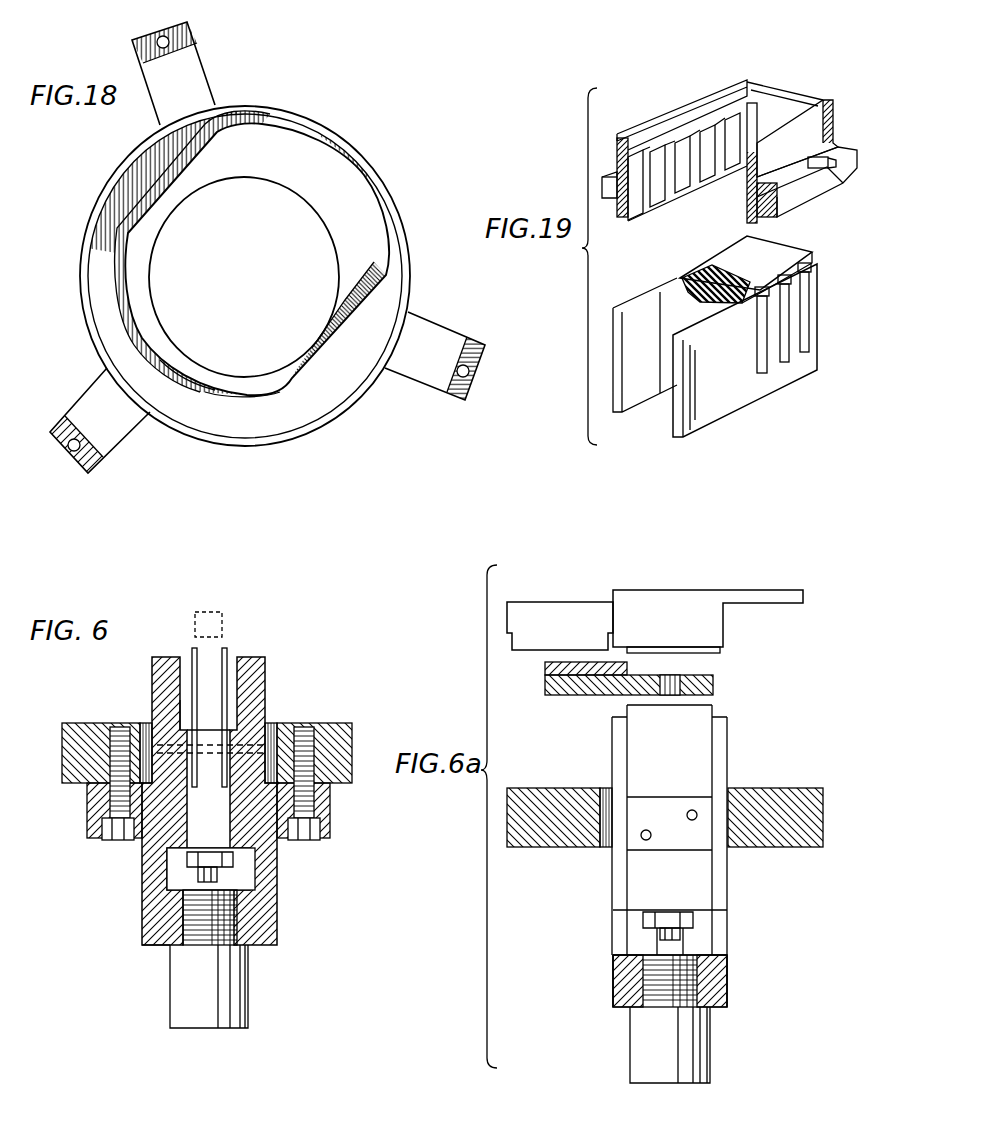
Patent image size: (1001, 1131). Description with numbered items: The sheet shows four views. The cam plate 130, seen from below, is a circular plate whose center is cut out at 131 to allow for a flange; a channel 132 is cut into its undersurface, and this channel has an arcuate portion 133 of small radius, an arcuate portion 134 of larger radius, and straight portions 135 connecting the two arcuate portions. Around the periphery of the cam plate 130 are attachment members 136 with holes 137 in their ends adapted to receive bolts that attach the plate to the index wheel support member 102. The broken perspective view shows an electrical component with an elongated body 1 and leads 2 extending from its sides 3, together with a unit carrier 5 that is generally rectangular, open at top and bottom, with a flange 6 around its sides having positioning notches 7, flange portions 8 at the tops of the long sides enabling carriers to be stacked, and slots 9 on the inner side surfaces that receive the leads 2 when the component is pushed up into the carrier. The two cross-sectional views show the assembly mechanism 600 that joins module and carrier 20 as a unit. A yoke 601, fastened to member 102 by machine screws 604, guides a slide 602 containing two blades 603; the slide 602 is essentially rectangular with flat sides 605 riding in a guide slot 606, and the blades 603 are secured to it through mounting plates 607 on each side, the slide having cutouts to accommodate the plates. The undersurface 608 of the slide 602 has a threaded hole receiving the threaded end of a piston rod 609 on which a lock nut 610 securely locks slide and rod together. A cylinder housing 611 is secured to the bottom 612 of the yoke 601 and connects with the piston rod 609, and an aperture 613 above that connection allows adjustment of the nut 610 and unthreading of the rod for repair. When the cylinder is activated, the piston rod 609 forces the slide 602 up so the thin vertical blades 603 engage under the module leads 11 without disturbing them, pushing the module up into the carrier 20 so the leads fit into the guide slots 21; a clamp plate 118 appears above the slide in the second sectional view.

In FIG. 18, the cam plate 130 is at (298, 115).
In FIG. 18, the center cut-out 131 is at (306, 268).
In FIG. 18, the channel 132 is at (252, 395).
In FIG. 18, the arcuate portion of small radius 133 is at (182, 360).
In FIG. 18, the arcuate portion of larger radius 134 is at (360, 170).
In FIG. 18, the straight portions 135 is at (218, 128).
In FIG. 18, the attachment members 136 is at (206, 55).
In FIG. 18, the holes 137 is at (163, 36).
In FIG. 19, the body 1 is at (783, 247).
In FIG. 19, the leads 2 is at (808, 320).
In FIG. 19, the sides 3 is at (792, 258).
In FIG. 19, the unit carrier 5 is at (782, 105).
In FIG. 19, the flange 6 is at (843, 147).
In FIG. 19, the positioning notches 7 is at (836, 168).
In FIG. 19, the flange portions 8 is at (717, 95).
In FIG. 19, the slots 9 is at (658, 183).
In FIG. 19, the leads 11 is at (796, 291).
In FIG. 19, the carrier 20 is at (610, 145).
In FIG. 19, the guide slots 21 is at (712, 165).
In FIG. 19, the blades 603 is at (623, 306).
In FIG. 6, the blades 603 is at (227, 652).
In FIG. 6A, the blades 603 is at (680, 760).
In FIG. 6, the index wheel support member 102 is at (358, 706).
In FIG. 6A, the index wheel support member 102 is at (805, 788).
In FIG. 6A, the clamp plate 118 is at (580, 698).
In FIG. 6, the assembly mechanism 600 is at (350, 843).
In FIG. 6A, the assembly mechanism 600 is at (605, 978).
In FIG. 6, the yoke 601 is at (282, 922).
In FIG. 6A, the yoke 601 is at (728, 988).
In FIG. 6, the slide 602 is at (230, 823).
In FIG. 6A, the slide 602 is at (682, 884).
In FIG. 6, the machine screws 604 is at (120, 836).
In FIG. 6, the flat sides 605 is at (186, 810).
In FIG. 6, the guide slot 606 is at (240, 698).
In FIG. 6, the mounting plates 607 is at (182, 770).
In FIG. 6A, the mounting plates 607 is at (677, 805).
In FIG. 6, the undersurface 608 is at (228, 838).
In FIG. 6, the piston rod 609 is at (172, 880).
In FIG. 6A, the piston rod 609 is at (683, 946).
In FIG. 6A, the lock nut 610 is at (693, 918).
In FIG. 6, the cylinder housing 611 is at (250, 992).
In FIG. 6A, the cylinder housing 611 is at (708, 1063).
In FIG. 6, the bottom 612 is at (158, 948).
In FIG. 6, the aperture 613 is at (172, 866).